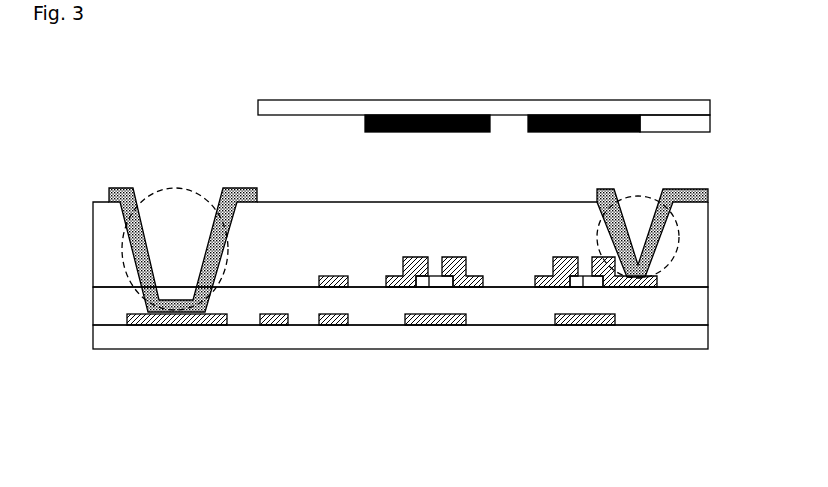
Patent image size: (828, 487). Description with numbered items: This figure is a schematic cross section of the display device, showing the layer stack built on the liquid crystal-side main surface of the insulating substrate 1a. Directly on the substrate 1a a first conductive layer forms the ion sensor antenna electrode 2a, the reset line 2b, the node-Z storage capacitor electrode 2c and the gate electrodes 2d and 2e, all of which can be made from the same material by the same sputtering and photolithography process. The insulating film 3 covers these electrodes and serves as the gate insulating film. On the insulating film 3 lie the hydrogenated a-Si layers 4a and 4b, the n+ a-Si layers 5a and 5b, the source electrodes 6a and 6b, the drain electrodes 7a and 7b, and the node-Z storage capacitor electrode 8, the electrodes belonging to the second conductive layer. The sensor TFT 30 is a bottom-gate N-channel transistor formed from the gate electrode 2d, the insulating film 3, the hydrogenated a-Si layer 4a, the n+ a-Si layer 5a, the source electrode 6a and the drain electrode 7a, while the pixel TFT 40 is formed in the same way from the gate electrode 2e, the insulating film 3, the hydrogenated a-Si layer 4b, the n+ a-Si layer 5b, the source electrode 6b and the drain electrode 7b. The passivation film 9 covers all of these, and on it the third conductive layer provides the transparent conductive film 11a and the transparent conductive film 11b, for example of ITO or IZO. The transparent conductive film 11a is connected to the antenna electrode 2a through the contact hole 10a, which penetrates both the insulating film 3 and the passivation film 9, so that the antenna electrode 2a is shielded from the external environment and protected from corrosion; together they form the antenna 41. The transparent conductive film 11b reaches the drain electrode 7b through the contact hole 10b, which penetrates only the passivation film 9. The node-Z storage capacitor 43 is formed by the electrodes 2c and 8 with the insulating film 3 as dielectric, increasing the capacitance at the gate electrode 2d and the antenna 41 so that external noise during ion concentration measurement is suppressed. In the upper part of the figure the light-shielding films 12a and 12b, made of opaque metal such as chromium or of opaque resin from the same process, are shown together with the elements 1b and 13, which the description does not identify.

The insulating substrate 1a is at (702, 337).
The second substrate 1b is at (710, 106).
The ion sensor antenna electrode 2a is at (195, 315).
The reset line 2b is at (272, 325).
The node-Z storage capacitor electrode 2c is at (333, 325).
The gate electrode 2d is at (441, 353).
The gate electrode 2e is at (607, 325).
The insulating film 3 is at (702, 305).
The hydrogenated a-Si layer 4a is at (429, 282).
The hydrogenated a-Si layer 4b is at (583, 282).
The n+ a-Si layer 5a is at (418, 288).
The n+ a-Si layer 5b is at (573, 288).
The source electrode 6a is at (392, 288).
The source electrode 6b is at (540, 288).
The drain electrode 7a is at (473, 288).
The drain electrode 7b is at (633, 288).
The node-Z storage capacitor electrode 8 is at (322, 288).
The passivation film 9 is at (702, 240).
The contact hole 10a is at (122, 272).
The contact hole 10b is at (640, 198).
The transparent conductive film 11a is at (167, 315).
The transparent conductive film 11b is at (660, 258).
The light-shielding film 12a is at (432, 115).
The light-shielding film 12b is at (583, 115).
The color filter layer 13 is at (710, 125).
The sensor TFT 30 is at (435, 348).
The pixel TFT 40 is at (622, 298).
The antenna 41 is at (145, 314).
The node-Z storage capacitor 43 is at (322, 358).